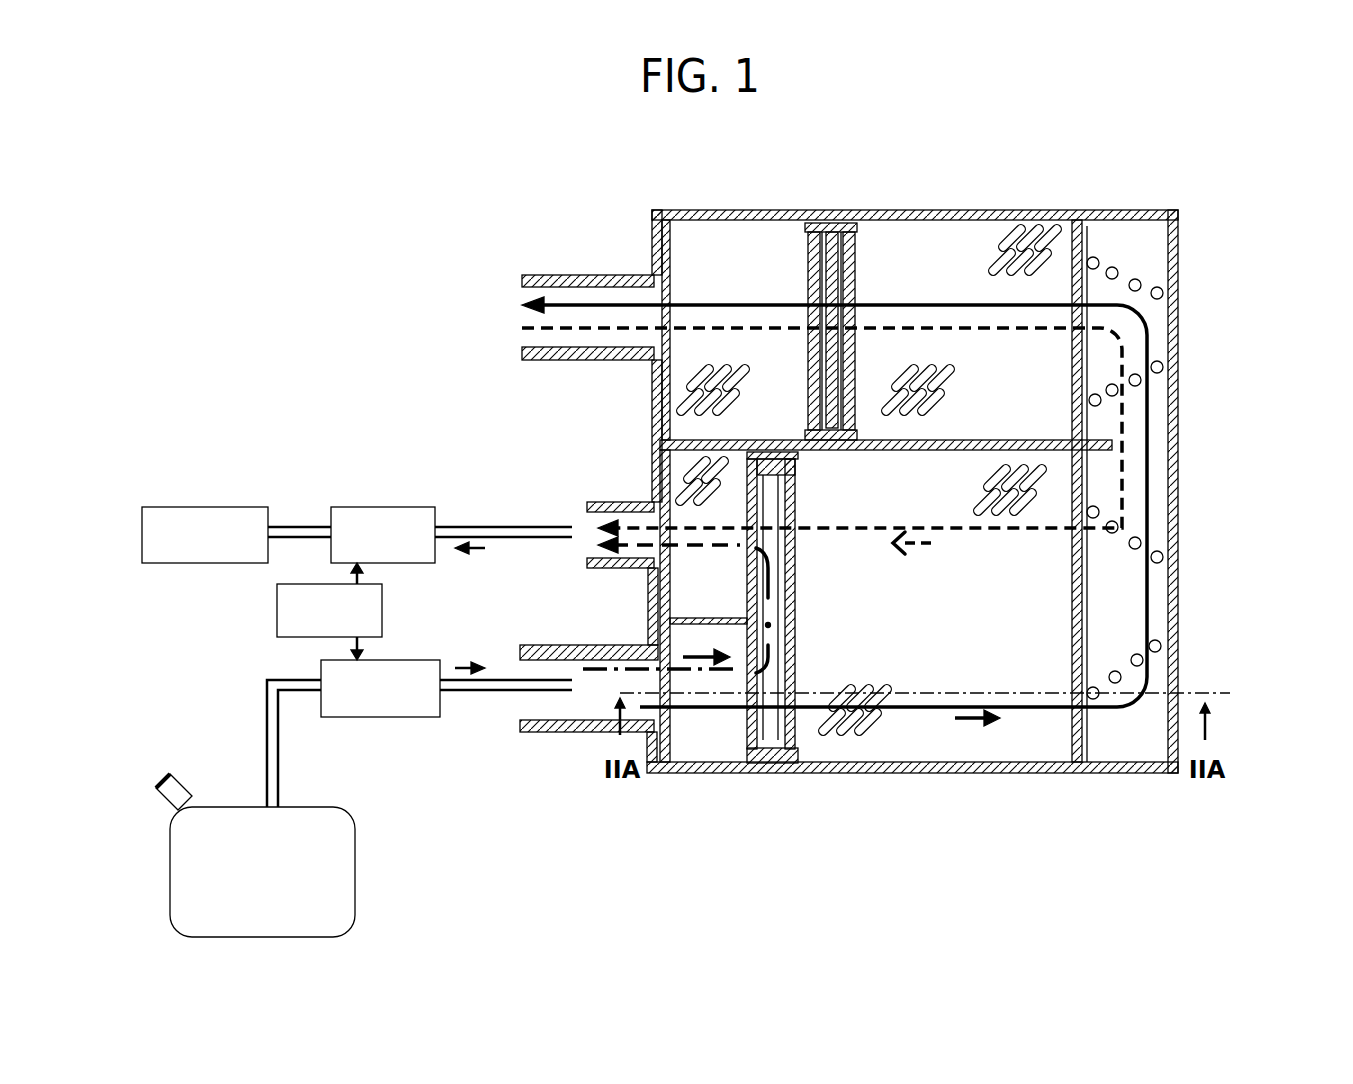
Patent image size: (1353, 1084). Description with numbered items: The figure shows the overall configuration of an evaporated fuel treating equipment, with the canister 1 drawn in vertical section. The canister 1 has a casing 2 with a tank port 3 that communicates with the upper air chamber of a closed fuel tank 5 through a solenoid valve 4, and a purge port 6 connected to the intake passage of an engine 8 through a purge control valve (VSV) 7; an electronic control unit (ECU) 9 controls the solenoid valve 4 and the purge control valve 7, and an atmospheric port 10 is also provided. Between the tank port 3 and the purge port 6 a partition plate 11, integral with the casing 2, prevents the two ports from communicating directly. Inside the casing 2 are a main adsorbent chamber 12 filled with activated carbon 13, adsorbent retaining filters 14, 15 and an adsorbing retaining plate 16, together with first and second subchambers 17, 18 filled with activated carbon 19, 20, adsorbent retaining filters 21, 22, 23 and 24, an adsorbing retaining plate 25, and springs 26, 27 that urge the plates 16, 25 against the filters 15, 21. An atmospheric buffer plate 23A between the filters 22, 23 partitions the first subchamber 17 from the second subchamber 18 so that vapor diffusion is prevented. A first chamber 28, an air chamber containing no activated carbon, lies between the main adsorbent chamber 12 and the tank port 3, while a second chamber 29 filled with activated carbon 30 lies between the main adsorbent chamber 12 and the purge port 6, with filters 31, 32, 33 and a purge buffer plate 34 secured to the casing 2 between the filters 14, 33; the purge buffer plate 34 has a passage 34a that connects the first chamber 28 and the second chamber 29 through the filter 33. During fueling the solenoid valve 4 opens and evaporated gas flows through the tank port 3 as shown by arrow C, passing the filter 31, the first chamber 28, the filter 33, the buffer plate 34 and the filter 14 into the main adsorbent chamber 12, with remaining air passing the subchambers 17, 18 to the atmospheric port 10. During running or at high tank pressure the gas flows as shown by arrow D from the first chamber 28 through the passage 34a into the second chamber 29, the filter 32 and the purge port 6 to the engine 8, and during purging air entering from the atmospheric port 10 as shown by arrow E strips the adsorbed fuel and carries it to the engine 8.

The canister 1 is at (1034, 202).
The casing 2 is at (937, 215).
The tank port 3 is at (565, 735).
The solenoid valve 4 is at (392, 717).
The closed fuel tank 5 is at (355, 862).
The purge port 6 is at (612, 502).
The purge control valve (VSV) 7 is at (375, 507).
The engine 8 is at (188, 507).
The electronic control unit (ECU) 9 is at (382, 602).
The atmospheric port 10 is at (566, 275).
The partition plate 11 is at (670, 632).
The main adsorbent chamber 12 is at (990, 762).
The activated carbon 13 is at (875, 735).
The adsorbent retaining filter 14 is at (800, 770).
The adsorbent retaining filter 15 is at (1062, 760).
The adsorbing retaining plate 16 is at (1085, 762).
The first subchamber 17 is at (878, 245).
The second subchamber 18 is at (748, 240).
The activated carbon 19 is at (1000, 240).
The activated carbon 20 is at (745, 385).
The adsorbent retaining filter 21 is at (1072, 362).
The adsorbent retaining filter 22 is at (850, 290).
The adsorbent retaining filter 23 is at (808, 286).
The atmospheric buffer plate 23A is at (820, 235).
The adsorbent retaining filter 24 is at (670, 272).
The adsorbing retaining plate 25 is at (1090, 235).
The spring 26 is at (1168, 642).
The spring 27 is at (1170, 367).
The first chamber 28 is at (718, 750).
The second chamber 29 is at (690, 585).
The activated carbon 30 is at (690, 480).
The filter 31 is at (665, 780).
The filter 32 is at (770, 580).
The filter 33 is at (760, 625).
The purge buffer plate 34 is at (760, 770).
The passage 34a is at (770, 497).
The arrow C is at (938, 722).
The arrow D is at (693, 700).
The arrow E is at (957, 532).